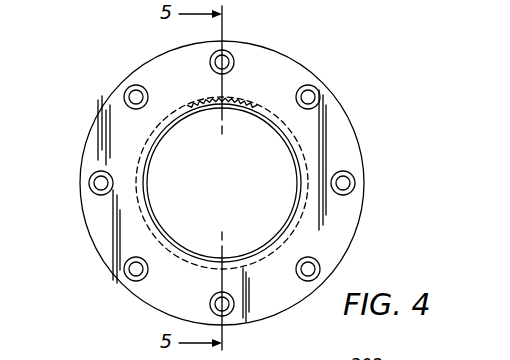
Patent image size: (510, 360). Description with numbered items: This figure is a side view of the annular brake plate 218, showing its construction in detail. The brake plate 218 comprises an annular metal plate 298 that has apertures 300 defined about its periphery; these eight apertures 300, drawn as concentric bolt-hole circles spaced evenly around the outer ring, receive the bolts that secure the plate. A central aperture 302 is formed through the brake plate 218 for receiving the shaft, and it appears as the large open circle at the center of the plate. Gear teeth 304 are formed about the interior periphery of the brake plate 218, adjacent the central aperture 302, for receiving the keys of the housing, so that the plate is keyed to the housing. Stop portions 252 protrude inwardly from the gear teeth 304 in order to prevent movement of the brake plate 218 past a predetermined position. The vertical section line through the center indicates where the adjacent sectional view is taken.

The brake plate 218 is at (330, 59).
The stop portions 252 is at (333, 148).
The annular metal plate 298 is at (282, 143).
The apertures 300 is at (135, 267).
The central aperture 302 is at (246, 178).
The gear teeth 304 is at (243, 100).